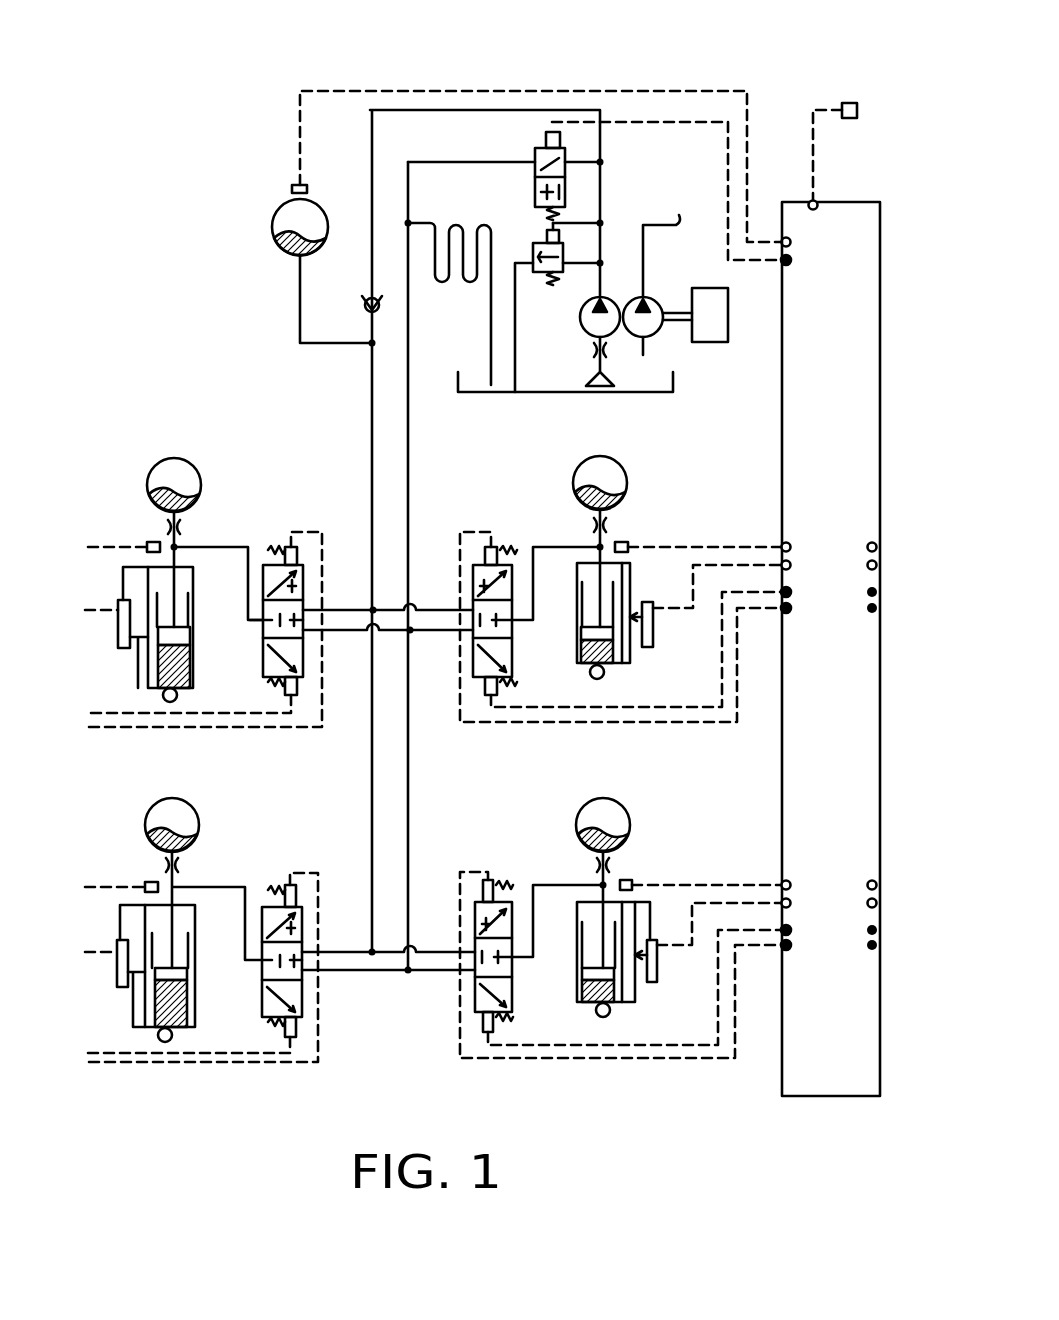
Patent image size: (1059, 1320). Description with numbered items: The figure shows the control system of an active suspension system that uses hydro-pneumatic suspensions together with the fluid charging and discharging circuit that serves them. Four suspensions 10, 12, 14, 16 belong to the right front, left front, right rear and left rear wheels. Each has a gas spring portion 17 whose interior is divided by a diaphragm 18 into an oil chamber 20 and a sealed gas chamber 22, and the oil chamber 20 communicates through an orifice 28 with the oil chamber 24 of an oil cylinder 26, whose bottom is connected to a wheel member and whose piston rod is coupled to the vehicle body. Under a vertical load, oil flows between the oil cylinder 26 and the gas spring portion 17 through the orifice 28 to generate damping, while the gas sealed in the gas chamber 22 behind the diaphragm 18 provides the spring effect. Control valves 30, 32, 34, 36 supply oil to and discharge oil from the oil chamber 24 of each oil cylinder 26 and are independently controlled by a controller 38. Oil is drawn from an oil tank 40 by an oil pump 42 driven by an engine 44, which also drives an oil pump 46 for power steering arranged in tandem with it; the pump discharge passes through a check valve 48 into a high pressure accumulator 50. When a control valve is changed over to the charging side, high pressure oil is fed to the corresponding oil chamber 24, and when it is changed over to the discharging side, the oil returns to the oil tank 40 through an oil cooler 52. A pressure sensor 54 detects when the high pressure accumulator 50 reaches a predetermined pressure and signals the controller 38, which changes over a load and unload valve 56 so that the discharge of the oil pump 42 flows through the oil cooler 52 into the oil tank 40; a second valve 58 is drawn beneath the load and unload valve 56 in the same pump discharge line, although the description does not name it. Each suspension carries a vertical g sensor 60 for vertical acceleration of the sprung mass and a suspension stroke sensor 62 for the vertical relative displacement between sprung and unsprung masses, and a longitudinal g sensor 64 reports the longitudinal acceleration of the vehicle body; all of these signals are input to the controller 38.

The suspension of right front wheel 10 is at (174, 607).
The suspension of left front wheel 12 is at (578, 653).
The suspension of right rear wheel 14 is at (190, 1007).
The suspension of left rear wheel 16 is at (575, 992).
The gas spring portion 17 is at (390, 635).
The diaphragm 18 is at (167, 482).
The oil chamber 20 is at (198, 482).
The sealed gas chamber 22 is at (154, 443).
The oil chamber of oil cylinder 24 is at (150, 674).
The oil cylinder 26 is at (191, 640).
The orifice 28 is at (187, 528).
The control valve 30 is at (315, 582).
The control valve 32 is at (470, 582).
The control valve 34 is at (305, 1002).
The control valve 36 is at (462, 1002).
The controller 38 is at (880, 372).
The oil tank 40 is at (505, 392).
The oil pump 42 is at (579, 330).
The engine 44 is at (728, 316).
The oil pump for power steering 46 is at (650, 302).
The check valve 48 is at (364, 304).
The high pressure accumulator 50 is at (273, 236).
The oil cooler 52 is at (466, 295).
The pressure sensor 54 is at (292, 188).
The load and unload valve 56 is at (535, 167).
The pressure relief valve 58 is at (538, 252).
The vertical g sensor 60 is at (150, 542).
The suspension stroke sensor 62 is at (118, 643).
The longitudinal g sensor 64 is at (857, 105).